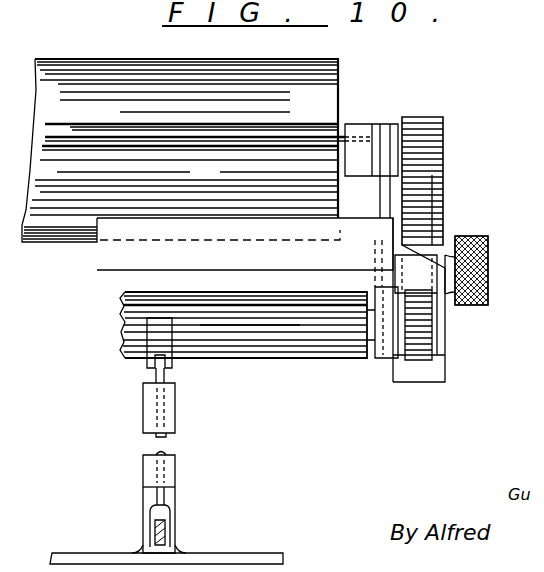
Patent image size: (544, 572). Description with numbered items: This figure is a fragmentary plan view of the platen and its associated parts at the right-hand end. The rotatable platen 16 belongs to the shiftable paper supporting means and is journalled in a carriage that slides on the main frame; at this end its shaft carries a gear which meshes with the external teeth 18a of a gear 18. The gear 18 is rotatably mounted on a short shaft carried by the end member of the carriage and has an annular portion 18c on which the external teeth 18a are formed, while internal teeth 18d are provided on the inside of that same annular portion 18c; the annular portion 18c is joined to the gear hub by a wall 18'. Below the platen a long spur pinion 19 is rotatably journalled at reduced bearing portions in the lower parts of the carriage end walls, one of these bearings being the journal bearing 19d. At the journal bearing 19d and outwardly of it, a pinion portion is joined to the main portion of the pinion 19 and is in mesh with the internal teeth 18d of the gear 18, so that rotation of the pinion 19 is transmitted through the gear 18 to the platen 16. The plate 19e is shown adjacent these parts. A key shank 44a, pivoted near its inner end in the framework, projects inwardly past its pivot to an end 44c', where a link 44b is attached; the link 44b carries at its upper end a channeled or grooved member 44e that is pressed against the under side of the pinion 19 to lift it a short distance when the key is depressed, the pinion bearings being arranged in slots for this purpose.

The platen 16 is at (330, 98).
The gear 18 is at (443, 192).
The external teeth 18a is at (447, 137).
The wall 18' is at (446, 325).
The annular portion 18c is at (447, 363).
The internal teeth 18d is at (402, 360).
The long spur pinion 19 is at (130, 322).
The journal bearing 19d is at (385, 352).
The support plate 19e is at (358, 308).
The key shank 44a is at (160, 525).
The link 44b is at (172, 432).
The end of the key shank 44c' is at (192, 524).
The channeled or grooved member 44e is at (152, 352).